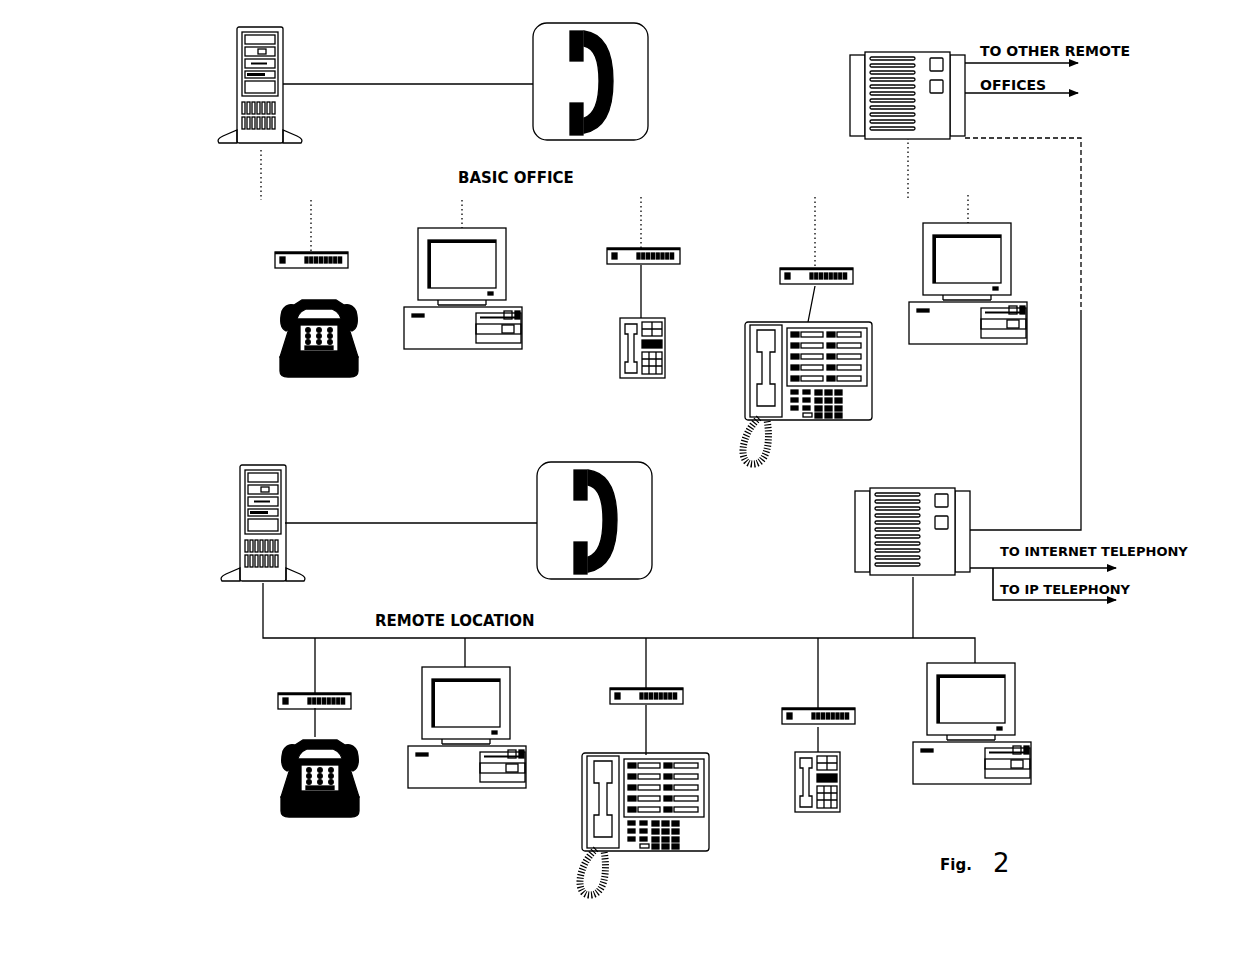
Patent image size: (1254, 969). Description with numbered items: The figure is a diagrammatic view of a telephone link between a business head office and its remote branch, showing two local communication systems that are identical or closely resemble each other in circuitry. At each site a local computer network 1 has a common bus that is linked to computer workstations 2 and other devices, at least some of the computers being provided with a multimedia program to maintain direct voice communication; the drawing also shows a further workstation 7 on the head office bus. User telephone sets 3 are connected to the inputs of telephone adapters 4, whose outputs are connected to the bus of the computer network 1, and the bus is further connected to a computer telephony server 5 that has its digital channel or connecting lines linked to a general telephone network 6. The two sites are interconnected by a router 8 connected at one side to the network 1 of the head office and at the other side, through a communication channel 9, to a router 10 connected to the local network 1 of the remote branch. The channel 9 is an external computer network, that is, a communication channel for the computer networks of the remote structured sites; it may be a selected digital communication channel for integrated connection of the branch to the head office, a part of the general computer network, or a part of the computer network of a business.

The local computer network 1 is at (772, 192).
The computer workstation 2 is at (948, 322).
The user telephone set 3 is at (290, 342).
The telephone adapter 4 is at (275, 263).
The computer telephony server 5 is at (240, 54).
The general telephone network 6 is at (628, 51).
The personal computer 7 is at (435, 340).
The router 8 is at (850, 93).
The communication channel 9 is at (1088, 312).
The router 10 is at (855, 568).